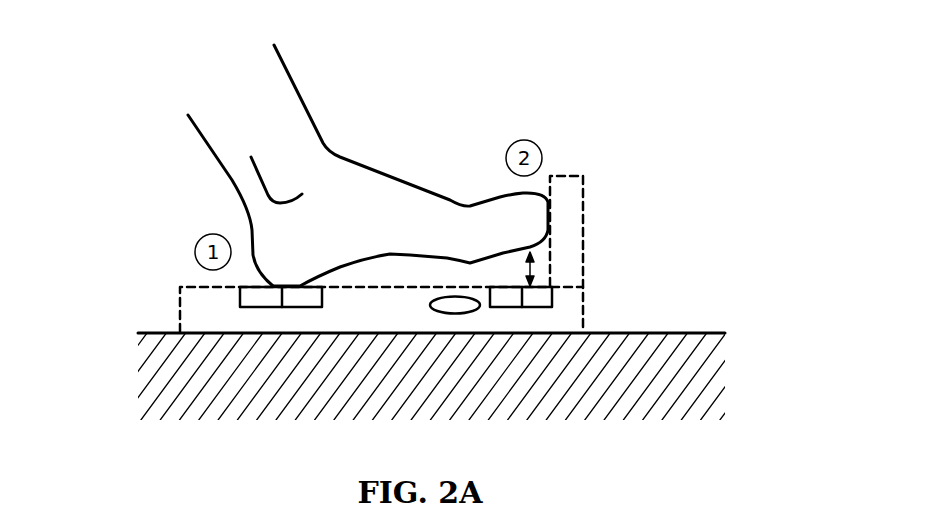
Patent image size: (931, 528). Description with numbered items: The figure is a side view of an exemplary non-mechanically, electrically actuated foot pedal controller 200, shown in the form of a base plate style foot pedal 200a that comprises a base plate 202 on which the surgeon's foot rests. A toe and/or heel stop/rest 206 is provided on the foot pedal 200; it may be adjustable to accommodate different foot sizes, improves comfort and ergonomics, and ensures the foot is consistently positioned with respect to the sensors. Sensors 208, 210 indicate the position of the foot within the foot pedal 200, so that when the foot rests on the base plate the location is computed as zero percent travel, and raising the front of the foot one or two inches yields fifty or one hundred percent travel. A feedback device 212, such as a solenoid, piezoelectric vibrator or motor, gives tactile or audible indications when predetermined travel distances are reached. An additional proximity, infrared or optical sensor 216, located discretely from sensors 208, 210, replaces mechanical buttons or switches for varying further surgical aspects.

The foot pedal controller 200 is at (397, 66).
The base plate style foot pedal 200a is at (587, 308).
The base plate 202 is at (400, 332).
The toe and/or heel stop/rest 206 is at (570, 213).
The sensor 208 is at (538, 297).
The sensor 210 is at (265, 295).
The feedback device 212 is at (552, 253).
The proximity/infrared/optical sensor 216 is at (457, 307).